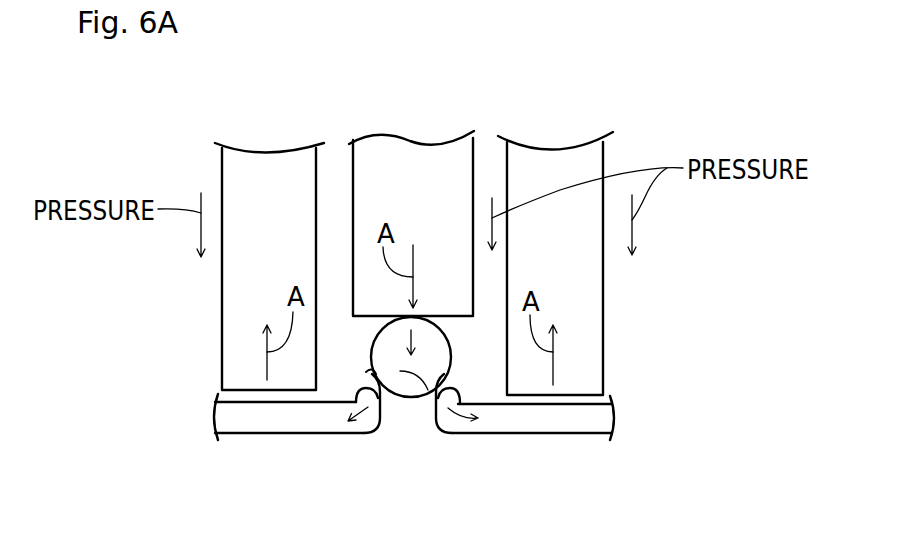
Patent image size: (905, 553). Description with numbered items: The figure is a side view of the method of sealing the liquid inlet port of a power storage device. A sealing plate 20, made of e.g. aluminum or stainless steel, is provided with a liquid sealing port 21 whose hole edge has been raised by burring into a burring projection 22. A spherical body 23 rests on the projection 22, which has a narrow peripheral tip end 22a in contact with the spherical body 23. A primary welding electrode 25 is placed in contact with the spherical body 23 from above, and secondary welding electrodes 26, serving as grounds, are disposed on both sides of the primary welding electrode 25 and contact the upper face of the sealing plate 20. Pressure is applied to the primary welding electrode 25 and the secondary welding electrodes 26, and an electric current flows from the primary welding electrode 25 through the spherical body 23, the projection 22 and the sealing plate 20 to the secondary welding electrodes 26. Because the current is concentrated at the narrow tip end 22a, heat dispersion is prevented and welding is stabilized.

The sealing plate 20 is at (277, 420).
The liquid sealing port 21 is at (395, 433).
The burring projection 22 is at (360, 386).
The peripheral tip end 22a is at (373, 362).
The spherical body 23 is at (432, 392).
The primary welding electrode 25 is at (353, 178).
The secondary welding electrodes 26 is at (222, 296).